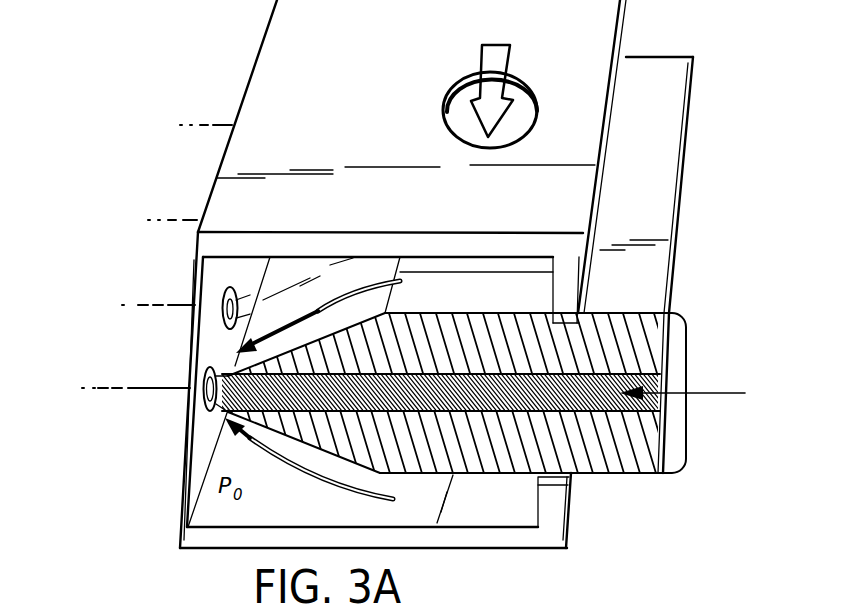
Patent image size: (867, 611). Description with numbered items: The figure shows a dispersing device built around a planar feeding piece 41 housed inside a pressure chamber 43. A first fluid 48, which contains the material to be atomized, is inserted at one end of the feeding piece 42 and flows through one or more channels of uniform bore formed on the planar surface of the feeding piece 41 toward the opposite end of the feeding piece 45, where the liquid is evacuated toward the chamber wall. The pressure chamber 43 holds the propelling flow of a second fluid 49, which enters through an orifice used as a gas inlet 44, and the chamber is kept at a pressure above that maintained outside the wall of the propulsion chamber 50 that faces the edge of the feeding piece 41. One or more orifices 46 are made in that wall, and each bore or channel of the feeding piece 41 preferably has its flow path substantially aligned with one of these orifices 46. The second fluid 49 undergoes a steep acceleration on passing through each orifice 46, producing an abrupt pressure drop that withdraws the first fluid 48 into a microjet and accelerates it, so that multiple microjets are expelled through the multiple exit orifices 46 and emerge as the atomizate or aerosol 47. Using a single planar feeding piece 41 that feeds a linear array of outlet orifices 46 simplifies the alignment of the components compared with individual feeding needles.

The feeding piece 41 is at (687, 426).
The end of the feeding piece 42 is at (665, 356).
The pressure chamber 43 is at (298, 513).
The orifice used as gas inlet 44 is at (535, 108).
The end of the feeding needle used to evacuate the liquid 45 is at (169, 406).
The orifices through which withdrawal takes place 46 is at (222, 306).
The atomizate or aerosol 47 is at (87, 368).
The first fluid containing material to be atomized 48 is at (746, 393).
The second fluid for creation of microjet 49 is at (483, 54).
The wall of the propulsion chamber facing the edge of the feeding piece 50 is at (184, 460).